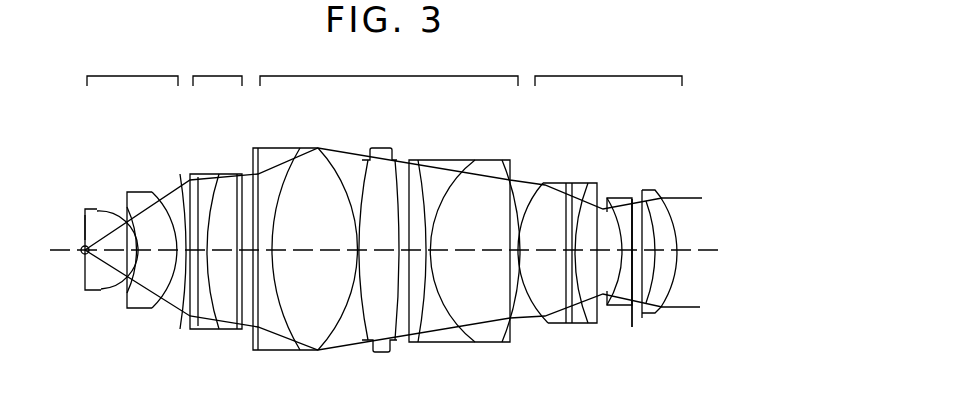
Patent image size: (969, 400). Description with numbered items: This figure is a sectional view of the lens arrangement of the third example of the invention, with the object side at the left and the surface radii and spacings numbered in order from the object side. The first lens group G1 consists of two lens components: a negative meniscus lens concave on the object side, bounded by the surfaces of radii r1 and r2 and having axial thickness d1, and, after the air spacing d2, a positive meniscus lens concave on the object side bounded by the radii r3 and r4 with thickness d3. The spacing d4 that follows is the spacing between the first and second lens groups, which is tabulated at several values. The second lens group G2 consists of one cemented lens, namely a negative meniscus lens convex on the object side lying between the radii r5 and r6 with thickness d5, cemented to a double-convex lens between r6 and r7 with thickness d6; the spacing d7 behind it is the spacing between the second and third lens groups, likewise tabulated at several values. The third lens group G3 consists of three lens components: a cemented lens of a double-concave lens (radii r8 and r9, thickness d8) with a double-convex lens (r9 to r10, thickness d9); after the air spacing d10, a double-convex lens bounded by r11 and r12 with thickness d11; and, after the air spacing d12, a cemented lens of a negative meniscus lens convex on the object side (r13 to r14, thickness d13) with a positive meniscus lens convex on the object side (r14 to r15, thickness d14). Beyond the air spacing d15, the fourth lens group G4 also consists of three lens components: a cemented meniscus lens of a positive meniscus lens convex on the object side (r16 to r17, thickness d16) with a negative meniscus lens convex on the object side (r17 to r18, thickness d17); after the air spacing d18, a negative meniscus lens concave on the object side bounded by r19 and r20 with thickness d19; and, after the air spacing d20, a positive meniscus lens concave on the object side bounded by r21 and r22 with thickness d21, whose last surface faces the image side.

The first lens group G1 is at (132, 65).
The second lens group G2 is at (217, 65).
The third lens group G3 is at (389, 65).
The fourth lens group G4 is at (608, 65).
The radius of curvature of first lens surface r1 is at (84, 227).
The radius of curvature of second lens surface r2 is at (102, 209).
The radius of curvature of third lens surface r3 is at (127, 212).
The radius of curvature of fourth lens surface r4 is at (152, 192).
The radius of curvature of fifth lens surface r5 is at (189, 176).
The radius of curvature of sixth lens surface r6 is at (218, 175).
The radius of curvature of seventh lens surface r7 is at (238, 176).
The radius of curvature of eighth lens surface r8 is at (257, 158).
The radius of curvature of ninth lens surface r9 is at (300, 148).
The radius of curvature of tenth lens surface r10 is at (321, 148).
The radius of curvature of eleventh lens surface r11 is at (372, 148).
The radius of curvature of twelfth lens surface r12 is at (394, 160).
The radius of curvature of thirteenth lens surface r13 is at (428, 162).
The radius of curvature of fourteenth lens surface r14 is at (473, 160).
The radius of curvature of fifteenth lens surface r15 is at (503, 160).
The radius of curvature of sixteenth lens surface r16 is at (543, 182).
The radius of curvature of seventeenth lens surface r17 is at (577, 183).
The radius of curvature of eighteenth lens surface r18 is at (591, 185).
The radius of curvature of nineteenth lens surface r19 is at (618, 198).
The radius of curvature of twentieth lens surface r20 is at (645, 200).
The radius of curvature of twenty-first lens surface r21 is at (650, 199).
The radius of curvature of twenty-second lens surface r22 is at (678, 222).
The spacing between first and second lens surfaces d1 is at (103, 249).
The spacing between second and third lens surfaces d2 is at (124, 284).
The spacing between third and fourth lens surfaces d3 is at (146, 250).
The spacing between fourth and fifth lens surfaces d4 is at (158, 310).
The spacing between fifth and sixth lens surfaces d5 is at (196, 331).
The spacing between sixth and seventh lens surfaces d6 is at (216, 251).
The spacing between seventh and eighth lens surfaces d7 is at (245, 331).
The spacing between eighth and ninth lens surfaces d8 is at (283, 351).
The spacing between ninth and tenth lens surfaces d9 is at (307, 266).
The spacing between tenth and eleventh lens surfaces d10 is at (352, 346).
The spacing between eleventh and twelfth lens surfaces d11 is at (380, 250).
The spacing between twelfth and thirteenth lens surfaces d12 is at (402, 346).
The spacing between thirteenth and fourteenth lens surfaces d13 is at (433, 343).
The spacing between fourteenth and fifteenth lens surfaces d14 is at (459, 251).
The spacing between fifteenth and sixteenth lens surfaces d15 is at (530, 323).
The spacing between sixteenth and seventeenth lens surfaces d16 is at (562, 253).
The spacing between seventeenth and eighteenth lens surfaces d17 is at (583, 324).
The spacing between eighteenth and nineteenth lens surfaces d18 is at (608, 251).
The spacing between nineteenth and twentieth lens surfaces d19 is at (628, 318).
The spacing between twentieth and twenty-first lens surfaces d20 is at (637, 318).
The spacing between twenty-first and twenty-second lens surfaces d21 is at (672, 278).